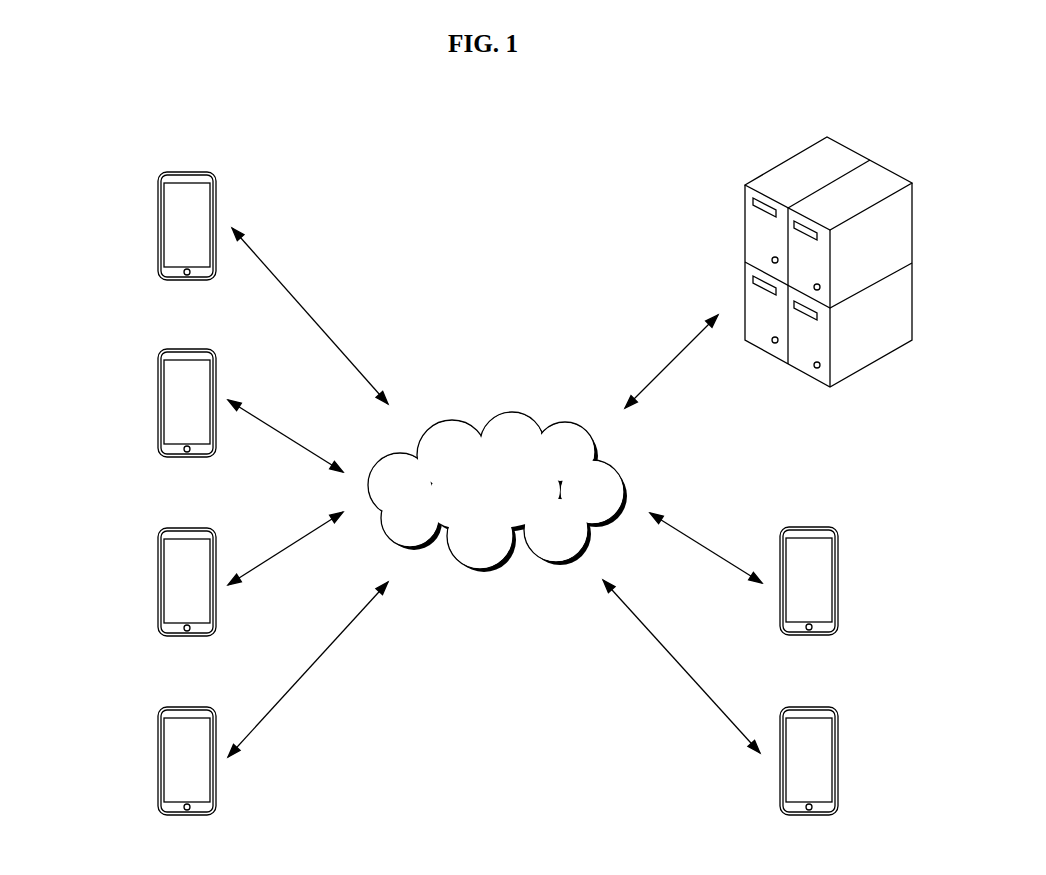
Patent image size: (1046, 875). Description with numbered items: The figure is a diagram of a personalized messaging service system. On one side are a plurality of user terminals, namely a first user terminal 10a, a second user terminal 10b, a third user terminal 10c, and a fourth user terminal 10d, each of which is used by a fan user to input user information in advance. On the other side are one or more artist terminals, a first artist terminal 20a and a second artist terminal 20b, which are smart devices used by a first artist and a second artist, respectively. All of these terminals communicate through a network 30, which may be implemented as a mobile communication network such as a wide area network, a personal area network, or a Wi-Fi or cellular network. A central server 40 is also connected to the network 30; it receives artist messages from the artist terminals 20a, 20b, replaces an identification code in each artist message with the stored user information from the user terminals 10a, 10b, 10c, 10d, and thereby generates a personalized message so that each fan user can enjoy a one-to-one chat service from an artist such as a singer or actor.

The first user terminal 10a is at (160, 225).
The second user terminal 10b is at (158, 400).
The third user terminal 10c is at (158, 580).
The fourth user terminal 10d is at (158, 757).
The first artist terminal 20a is at (838, 580).
The second artist terminal 20b is at (838, 755).
The network 30 is at (505, 410).
The central server 40 is at (783, 160).